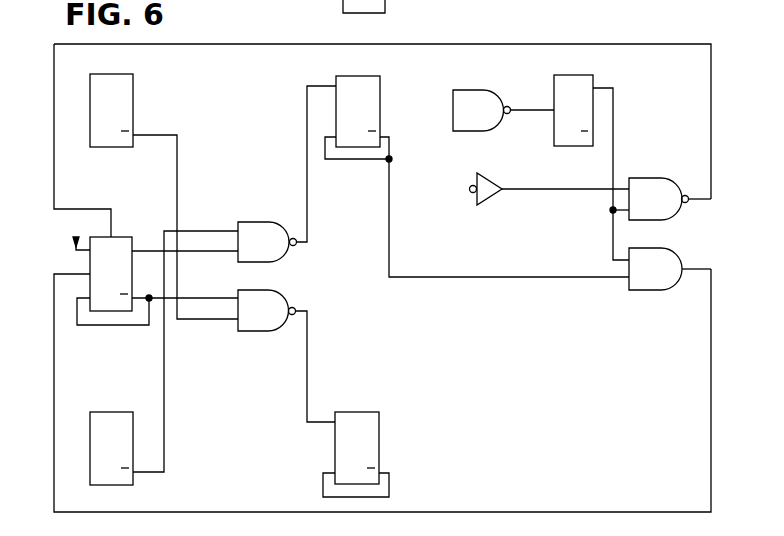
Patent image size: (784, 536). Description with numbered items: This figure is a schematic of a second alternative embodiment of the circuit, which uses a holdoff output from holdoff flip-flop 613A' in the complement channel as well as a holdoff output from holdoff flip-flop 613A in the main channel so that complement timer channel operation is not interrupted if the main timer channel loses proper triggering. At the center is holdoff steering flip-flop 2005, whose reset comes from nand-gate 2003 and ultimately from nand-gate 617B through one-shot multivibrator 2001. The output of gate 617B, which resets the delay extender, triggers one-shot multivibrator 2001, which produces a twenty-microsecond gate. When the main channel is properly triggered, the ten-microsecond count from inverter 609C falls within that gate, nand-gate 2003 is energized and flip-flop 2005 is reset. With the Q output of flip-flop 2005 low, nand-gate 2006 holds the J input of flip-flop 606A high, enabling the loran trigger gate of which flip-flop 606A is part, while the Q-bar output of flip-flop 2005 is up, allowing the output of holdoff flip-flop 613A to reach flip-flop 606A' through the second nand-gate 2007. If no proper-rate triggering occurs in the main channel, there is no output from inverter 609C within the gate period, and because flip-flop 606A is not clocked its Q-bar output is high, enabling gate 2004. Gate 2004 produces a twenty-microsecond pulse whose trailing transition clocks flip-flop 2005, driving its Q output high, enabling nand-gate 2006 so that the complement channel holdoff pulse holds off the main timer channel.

The holdoff flip-flop 613A is at (110, 97).
The holdoff flip-flop 613A' is at (112, 434).
The holdoff steering flip-flop 2005 is at (90, 268).
The nand-gate 2006 is at (284, 222).
The NAND gate 2007 is at (273, 290).
The flip-flop 606A is at (364, 98).
The flip-flop 606A' is at (368, 433).
The nand-gate 617B is at (503, 90).
The one-shot multivibrator 2001 is at (572, 75).
The inverter 609C is at (506, 168).
The nand-gate 2003 is at (688, 161).
The gate 2004 is at (672, 250).